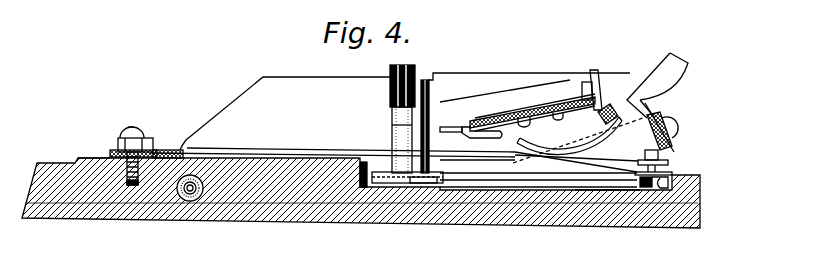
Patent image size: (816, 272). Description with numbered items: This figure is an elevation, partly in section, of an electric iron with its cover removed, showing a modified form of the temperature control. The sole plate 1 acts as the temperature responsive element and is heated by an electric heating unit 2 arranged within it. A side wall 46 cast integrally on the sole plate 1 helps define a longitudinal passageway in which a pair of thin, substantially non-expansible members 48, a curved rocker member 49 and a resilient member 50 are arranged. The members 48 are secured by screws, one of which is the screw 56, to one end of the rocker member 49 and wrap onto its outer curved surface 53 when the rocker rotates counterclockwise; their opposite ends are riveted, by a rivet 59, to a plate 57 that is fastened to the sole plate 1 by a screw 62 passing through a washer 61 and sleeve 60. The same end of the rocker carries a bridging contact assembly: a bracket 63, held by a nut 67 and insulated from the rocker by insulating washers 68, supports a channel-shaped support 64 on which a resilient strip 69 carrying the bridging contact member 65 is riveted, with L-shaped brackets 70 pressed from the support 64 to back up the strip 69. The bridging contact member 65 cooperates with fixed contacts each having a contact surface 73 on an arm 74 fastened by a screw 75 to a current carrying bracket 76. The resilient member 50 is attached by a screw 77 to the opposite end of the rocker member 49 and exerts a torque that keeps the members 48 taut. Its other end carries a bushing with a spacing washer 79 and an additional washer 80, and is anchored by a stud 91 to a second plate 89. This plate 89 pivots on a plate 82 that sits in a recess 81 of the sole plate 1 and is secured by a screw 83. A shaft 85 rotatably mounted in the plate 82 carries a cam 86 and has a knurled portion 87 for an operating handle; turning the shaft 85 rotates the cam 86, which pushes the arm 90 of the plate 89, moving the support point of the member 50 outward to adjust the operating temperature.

The sole plate 1 is at (156, 212).
The electric heating unit 2 is at (196, 203).
The side wall 46 is at (285, 91).
The members 48 is at (213, 148).
The rocker member 49 is at (508, 148).
The resilient member 50 is at (576, 166).
The outer surface of rocker 53 is at (604, 136).
The screw 56 is at (606, 123).
The plate 57 is at (110, 152).
The rivet 59 is at (162, 150).
The sleeve 60 is at (124, 138).
The washer 61 is at (118, 150).
The screw 62 is at (139, 130).
The bracket 63 is at (600, 92).
The channel-shaped support 64 is at (540, 110).
The bridging contact member 65 is at (472, 124).
The nut 67 is at (617, 100).
The insulating washers 68 is at (602, 124).
The resilient strip 69 is at (568, 106).
The L-shaped brackets 70 is at (524, 117).
The contact surface 73 is at (485, 138).
The arm 74 is at (450, 133).
The screw 75 is at (455, 128).
The current carrying bracket 76 is at (462, 106).
The screw 77 is at (530, 152).
The spacing washer 79 is at (672, 173).
The washer 80 is at (665, 168).
The recess 81 is at (367, 185).
The plate 82 is at (622, 189).
The screw 83 is at (646, 185).
The shaft 85 is at (396, 132).
The cam 86 is at (364, 168).
The knurled portion 87 is at (416, 72).
The second plate 89 is at (602, 186).
The arm 90 is at (413, 179).
The stud 91 is at (665, 155).